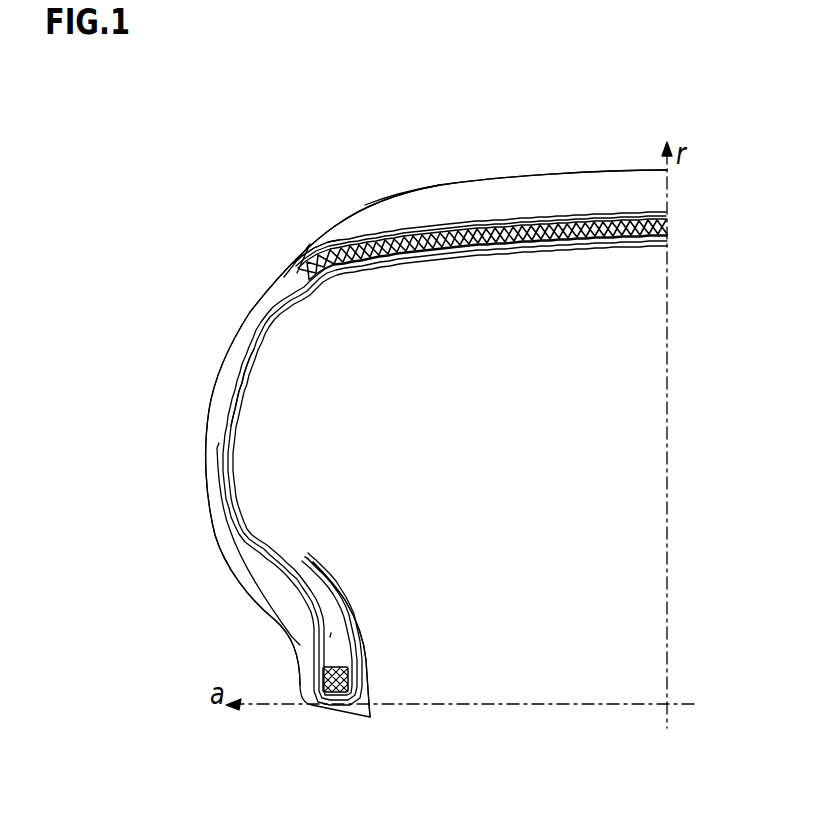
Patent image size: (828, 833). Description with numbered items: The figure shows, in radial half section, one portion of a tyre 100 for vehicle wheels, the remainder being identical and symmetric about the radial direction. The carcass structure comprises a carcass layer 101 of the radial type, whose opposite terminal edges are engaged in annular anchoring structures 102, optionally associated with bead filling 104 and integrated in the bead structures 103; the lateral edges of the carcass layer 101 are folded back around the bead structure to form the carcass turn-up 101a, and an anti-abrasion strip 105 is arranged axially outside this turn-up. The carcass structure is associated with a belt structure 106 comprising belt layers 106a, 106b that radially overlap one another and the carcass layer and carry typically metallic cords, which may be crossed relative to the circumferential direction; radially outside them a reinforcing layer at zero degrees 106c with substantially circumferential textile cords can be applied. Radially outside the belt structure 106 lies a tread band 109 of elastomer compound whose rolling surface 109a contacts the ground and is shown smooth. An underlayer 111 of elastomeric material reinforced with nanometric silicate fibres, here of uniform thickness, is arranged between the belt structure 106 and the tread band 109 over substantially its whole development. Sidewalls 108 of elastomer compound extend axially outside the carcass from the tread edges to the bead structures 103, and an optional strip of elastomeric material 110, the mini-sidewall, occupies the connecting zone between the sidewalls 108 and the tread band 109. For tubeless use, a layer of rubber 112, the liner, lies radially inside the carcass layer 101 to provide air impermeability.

The tyre 100 is at (208, 311).
The carcass layer 101 is at (300, 310).
The carcass turn-up 101a is at (300, 582).
The annular anchoring structure 102 is at (337, 682).
The bead structure 103 is at (360, 645).
The bead filling 104 is at (330, 637).
The anti-abrasion strip 105 is at (272, 587).
The belt structure 106 is at (550, 208).
The belt layer 106a is at (548, 243).
The belt layer 106b is at (613, 250).
The reinforcing layer at zero degrees 106c is at (474, 243).
The sidewall 108 is at (212, 394).
The tread band 109 is at (470, 195).
The rolling surface 109a is at (387, 190).
The strip of elastomeric material 110 is at (287, 278).
The underlayer 111 is at (332, 244).
The layer of rubber 112 is at (242, 398).